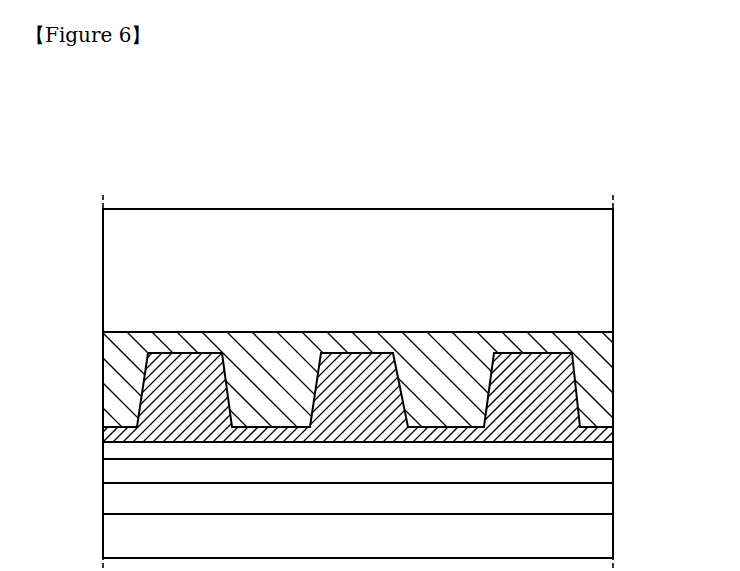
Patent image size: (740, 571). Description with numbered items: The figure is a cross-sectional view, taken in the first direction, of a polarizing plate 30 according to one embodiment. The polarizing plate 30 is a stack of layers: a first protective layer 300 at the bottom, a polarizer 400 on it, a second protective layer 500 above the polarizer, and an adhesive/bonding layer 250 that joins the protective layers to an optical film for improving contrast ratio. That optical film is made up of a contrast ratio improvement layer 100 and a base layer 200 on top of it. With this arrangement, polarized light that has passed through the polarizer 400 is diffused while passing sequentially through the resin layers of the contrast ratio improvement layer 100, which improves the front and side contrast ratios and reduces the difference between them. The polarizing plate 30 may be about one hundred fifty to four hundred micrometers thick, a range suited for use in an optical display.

The polarizing plate 30 is at (546, 168).
The base layer 200 is at (602, 249).
The contrast ratio improvement layer 100 is at (625, 333).
The adhesive/bonding layer 250 is at (600, 452).
The second protective layer 500 is at (603, 472).
The polarizer 400 is at (603, 498).
The first protective layer 300 is at (600, 545).